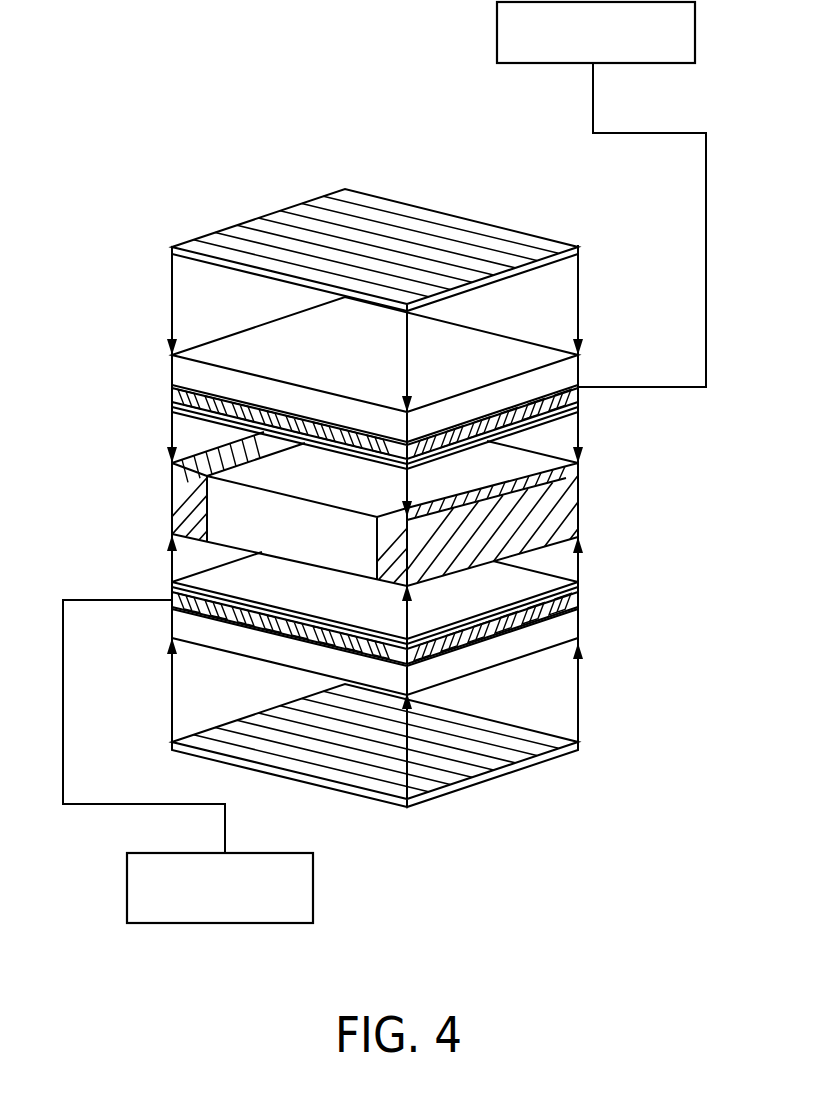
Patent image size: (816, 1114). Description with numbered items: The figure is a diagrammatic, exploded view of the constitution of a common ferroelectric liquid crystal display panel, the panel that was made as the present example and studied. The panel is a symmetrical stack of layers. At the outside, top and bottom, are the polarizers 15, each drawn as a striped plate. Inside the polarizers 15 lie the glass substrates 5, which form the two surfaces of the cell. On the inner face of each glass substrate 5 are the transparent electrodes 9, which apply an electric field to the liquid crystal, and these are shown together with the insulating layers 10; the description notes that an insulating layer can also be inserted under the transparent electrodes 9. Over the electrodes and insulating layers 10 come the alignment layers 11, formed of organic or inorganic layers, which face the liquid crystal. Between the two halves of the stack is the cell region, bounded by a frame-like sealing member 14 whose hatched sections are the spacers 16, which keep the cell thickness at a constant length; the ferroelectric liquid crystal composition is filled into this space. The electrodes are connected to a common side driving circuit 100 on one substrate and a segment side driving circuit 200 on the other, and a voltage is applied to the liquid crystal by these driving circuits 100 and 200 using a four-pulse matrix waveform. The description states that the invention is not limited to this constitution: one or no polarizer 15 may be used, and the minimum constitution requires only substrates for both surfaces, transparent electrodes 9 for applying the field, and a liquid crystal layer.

The glass substrate 5 is at (567, 377).
The transparent electrode 9 is at (580, 392).
The insulating layer 10 is at (172, 403).
The alignment layer 11 is at (578, 411).
The sealing member 14 is at (186, 490).
The polarizer 15 is at (578, 246).
The spacer 16 is at (200, 512).
The common side driving circuit 100 is at (680, 64).
The segment side driving circuit 200 is at (260, 923).